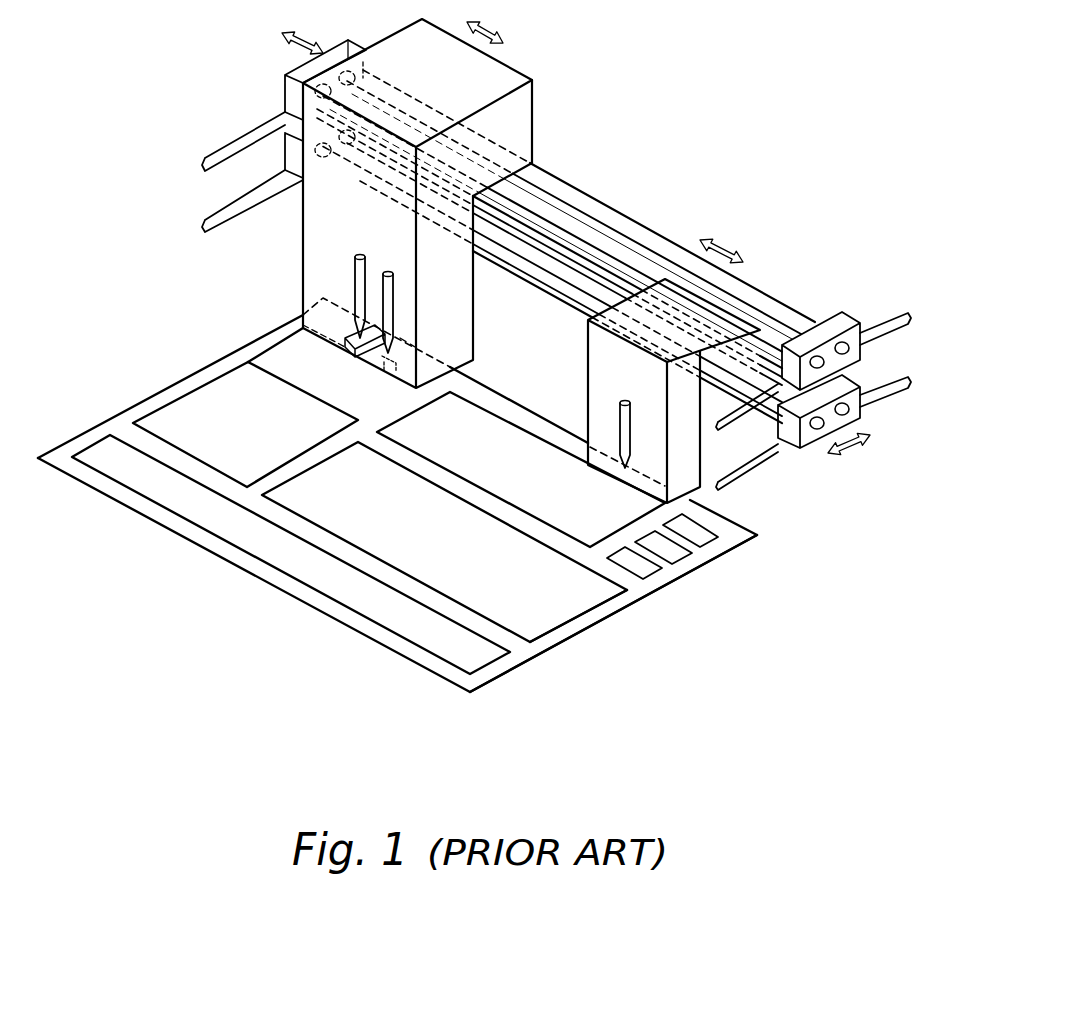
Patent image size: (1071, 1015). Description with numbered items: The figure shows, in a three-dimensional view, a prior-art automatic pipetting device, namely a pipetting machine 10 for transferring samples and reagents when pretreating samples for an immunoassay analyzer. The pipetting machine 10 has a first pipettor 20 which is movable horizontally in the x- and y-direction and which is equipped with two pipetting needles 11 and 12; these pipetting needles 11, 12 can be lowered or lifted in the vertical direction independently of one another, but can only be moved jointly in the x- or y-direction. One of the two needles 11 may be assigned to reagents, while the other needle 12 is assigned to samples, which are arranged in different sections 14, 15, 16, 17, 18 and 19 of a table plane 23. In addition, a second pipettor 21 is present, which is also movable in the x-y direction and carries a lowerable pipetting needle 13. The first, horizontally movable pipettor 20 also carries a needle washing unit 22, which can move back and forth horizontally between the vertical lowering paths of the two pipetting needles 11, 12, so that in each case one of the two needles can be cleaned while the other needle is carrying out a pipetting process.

The pipetting machine 10 is at (716, 132).
The pipetting needle 11 is at (355, 278).
The pipetting needle 12 is at (395, 292).
The pipetting needle 13 is at (621, 431).
The section 14 is at (279, 563).
The section 15 is at (440, 560).
The section 16 is at (229, 435).
The section 17 is at (505, 479).
The section 18 is at (317, 390).
The section 19 is at (697, 536).
The first pipettor 20 is at (545, 77).
The second pipettor 21 is at (749, 274).
The needle washing unit 22 is at (303, 316).
The table plane 23 is at (640, 590).